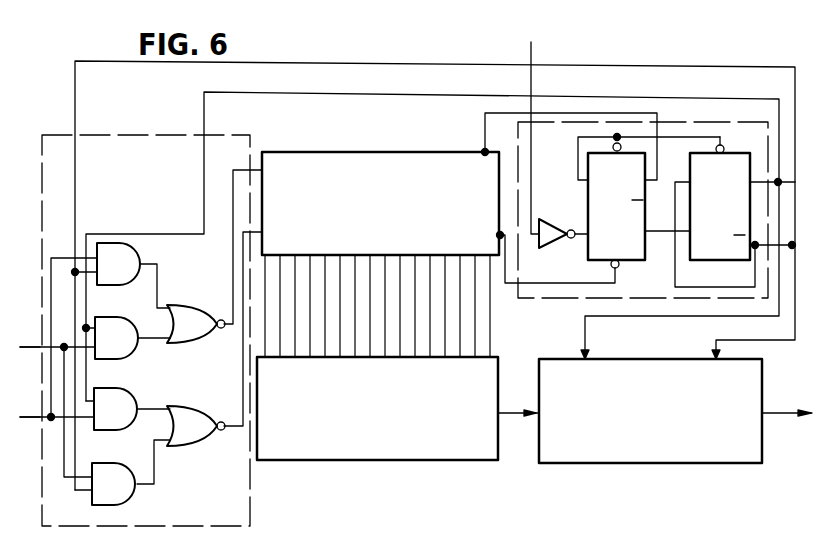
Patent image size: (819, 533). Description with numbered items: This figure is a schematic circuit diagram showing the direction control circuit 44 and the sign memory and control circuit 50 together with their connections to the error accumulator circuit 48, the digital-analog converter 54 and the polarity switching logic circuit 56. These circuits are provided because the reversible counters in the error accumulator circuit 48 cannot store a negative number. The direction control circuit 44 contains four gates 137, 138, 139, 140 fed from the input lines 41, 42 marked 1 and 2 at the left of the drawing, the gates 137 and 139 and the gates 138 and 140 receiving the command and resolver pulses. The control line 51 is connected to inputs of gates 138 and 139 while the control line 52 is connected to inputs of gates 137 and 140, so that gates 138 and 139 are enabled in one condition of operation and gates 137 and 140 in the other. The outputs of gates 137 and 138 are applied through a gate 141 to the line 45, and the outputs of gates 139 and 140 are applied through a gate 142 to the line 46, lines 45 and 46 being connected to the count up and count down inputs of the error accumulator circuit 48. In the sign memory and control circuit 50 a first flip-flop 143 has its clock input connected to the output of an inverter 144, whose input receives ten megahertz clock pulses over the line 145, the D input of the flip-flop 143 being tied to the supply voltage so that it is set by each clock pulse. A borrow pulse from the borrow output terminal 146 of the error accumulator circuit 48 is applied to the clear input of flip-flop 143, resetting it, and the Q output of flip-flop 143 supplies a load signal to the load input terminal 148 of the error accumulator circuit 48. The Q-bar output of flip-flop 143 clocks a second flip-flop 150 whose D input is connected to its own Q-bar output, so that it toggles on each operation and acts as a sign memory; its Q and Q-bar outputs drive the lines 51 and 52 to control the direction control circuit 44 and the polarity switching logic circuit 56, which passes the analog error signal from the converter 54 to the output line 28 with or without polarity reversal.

The input signal line 1 is at (20, 434).
The input signal line 2 is at (21, 333).
The output line 28 is at (775, 416).
The input line 41 is at (22, 419).
The line 42 is at (25, 346).
The direction control circuit 44 is at (133, 136).
The line 45 is at (245, 168).
The line 46 is at (230, 431).
The error accumulator circuit 48 is at (300, 152).
The sign memory and control circuit 50 is at (718, 122).
The control line 51 is at (313, 94).
The control line 52 is at (80, 68).
The digital-analog converter 54 is at (455, 454).
The polarity switching logic circuit 56 is at (715, 456).
The gate 137 is at (107, 250).
The gate 138 is at (107, 326).
The gate 139 is at (114, 397).
The gate 140 is at (103, 470).
The gate 141 is at (181, 310).
The gate 142 is at (184, 413).
The first flip-flop 143 is at (588, 191).
The inverter 144 is at (544, 248).
The line 145 is at (531, 54).
The borrow output terminal 146 is at (505, 290).
The load input terminal 148 is at (478, 148).
The second flip-flop 150 is at (702, 258).